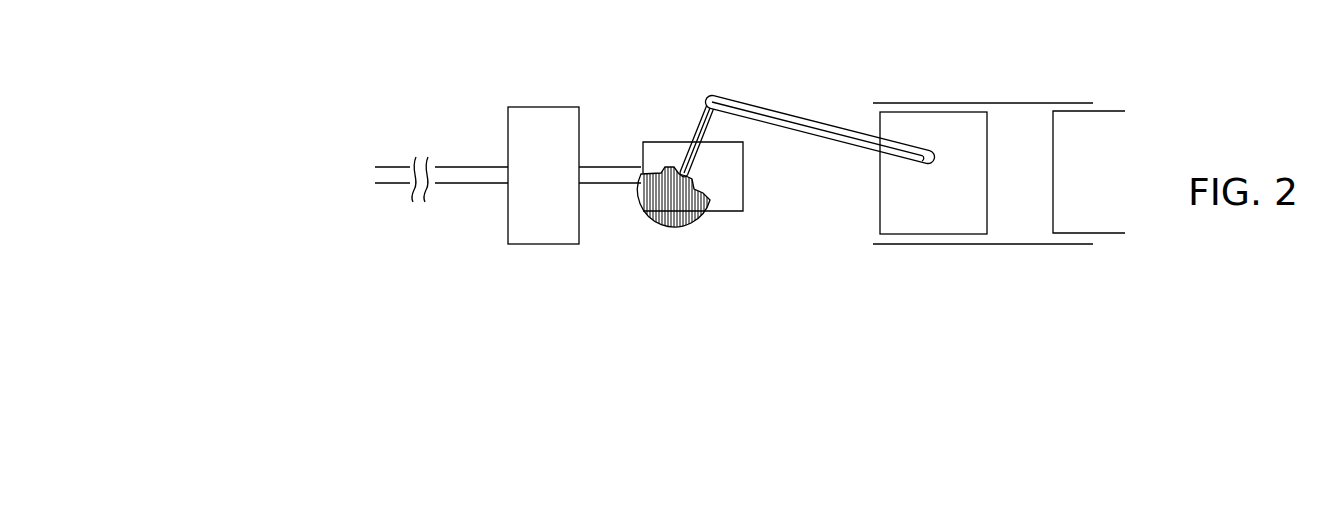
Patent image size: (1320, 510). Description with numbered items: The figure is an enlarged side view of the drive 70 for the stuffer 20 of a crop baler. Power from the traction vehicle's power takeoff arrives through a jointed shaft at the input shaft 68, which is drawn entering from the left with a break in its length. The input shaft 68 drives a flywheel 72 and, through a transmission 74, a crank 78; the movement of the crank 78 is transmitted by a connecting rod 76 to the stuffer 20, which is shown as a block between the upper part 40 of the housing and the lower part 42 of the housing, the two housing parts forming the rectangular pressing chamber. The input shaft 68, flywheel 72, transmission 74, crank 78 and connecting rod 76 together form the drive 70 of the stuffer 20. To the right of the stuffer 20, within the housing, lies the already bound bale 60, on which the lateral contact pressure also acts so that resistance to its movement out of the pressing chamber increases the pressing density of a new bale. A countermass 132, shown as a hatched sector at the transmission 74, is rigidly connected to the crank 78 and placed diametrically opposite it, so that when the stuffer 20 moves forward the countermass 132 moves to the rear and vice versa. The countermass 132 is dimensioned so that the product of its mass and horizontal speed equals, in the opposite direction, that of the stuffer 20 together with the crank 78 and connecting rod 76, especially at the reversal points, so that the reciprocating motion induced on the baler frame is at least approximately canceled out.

The stuffer 20 is at (959, 127).
The upper part of the housing 40 is at (1020, 103).
The lower part of the housing 42 is at (1010, 246).
The bale 60 is at (1080, 223).
The input shaft 68 is at (404, 177).
The drive 70 is at (788, 230).
The flywheel 72 is at (552, 117).
The transmission 74 is at (718, 195).
The connecting rod 76 is at (795, 128).
The crank 78 is at (705, 122).
The countermass 132 is at (662, 220).